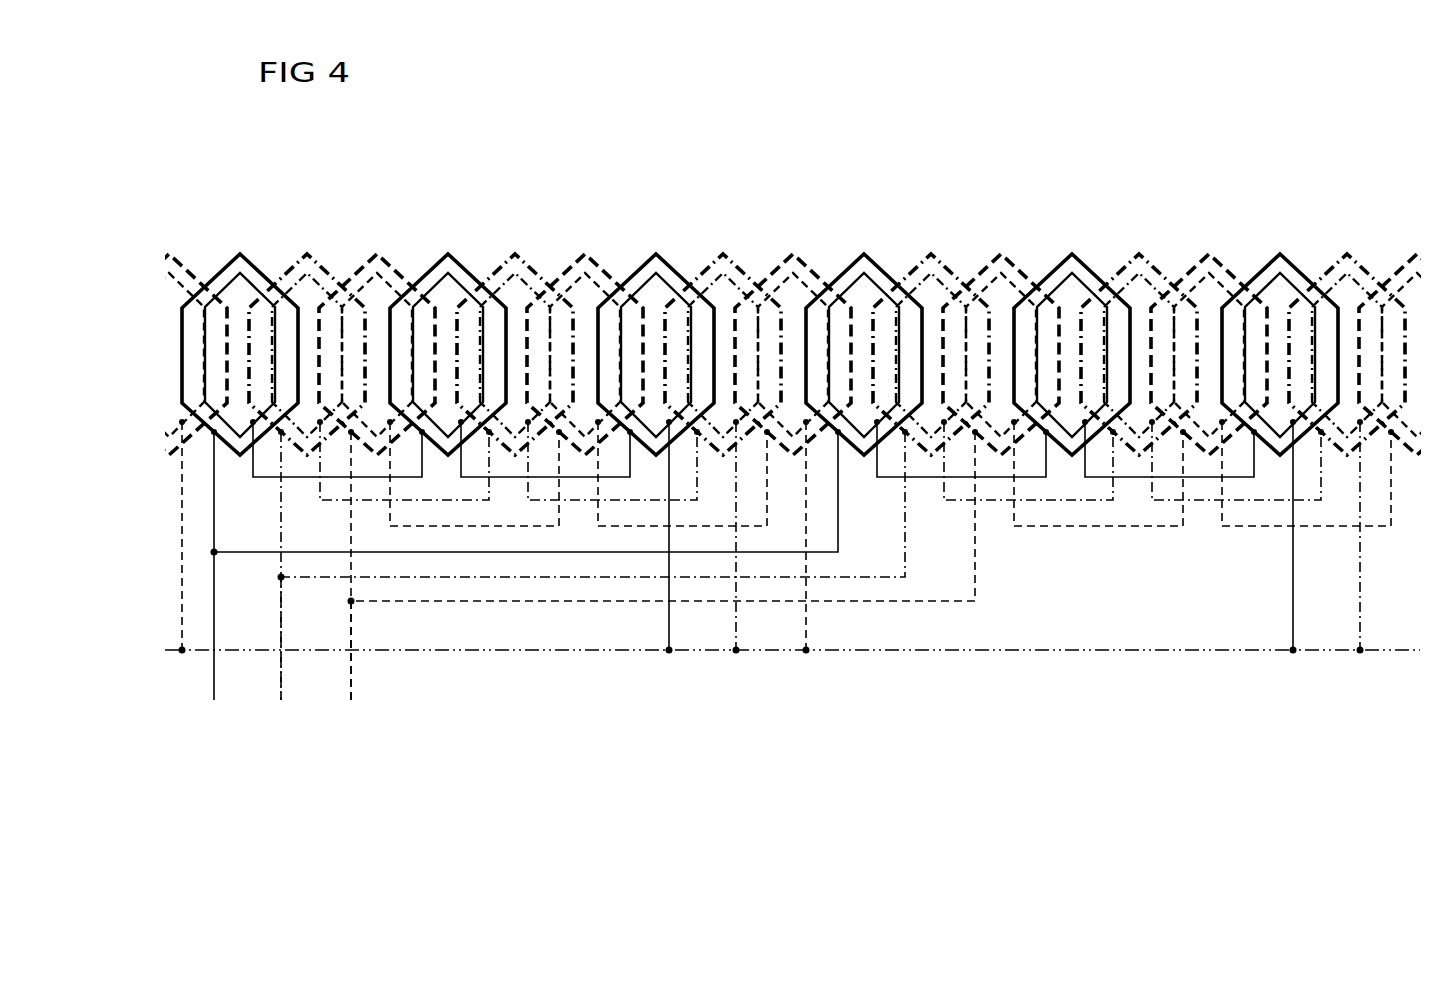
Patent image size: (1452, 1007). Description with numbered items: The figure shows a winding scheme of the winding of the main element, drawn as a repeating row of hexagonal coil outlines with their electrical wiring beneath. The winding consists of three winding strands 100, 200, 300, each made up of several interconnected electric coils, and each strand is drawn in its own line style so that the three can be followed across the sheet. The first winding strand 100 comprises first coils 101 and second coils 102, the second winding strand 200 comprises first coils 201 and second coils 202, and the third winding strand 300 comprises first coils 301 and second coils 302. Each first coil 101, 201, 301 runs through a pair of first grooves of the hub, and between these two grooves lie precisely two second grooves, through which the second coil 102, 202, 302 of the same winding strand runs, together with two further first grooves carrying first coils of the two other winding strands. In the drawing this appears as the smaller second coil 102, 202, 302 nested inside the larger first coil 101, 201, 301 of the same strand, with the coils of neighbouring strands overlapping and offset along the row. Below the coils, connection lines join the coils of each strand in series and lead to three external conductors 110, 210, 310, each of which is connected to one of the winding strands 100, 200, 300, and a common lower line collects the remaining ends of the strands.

The first winding strand 100 is at (268, 478).
The first coil of the first winding strand 101 is at (221, 268).
The second coil of the first winding strand 102 is at (211, 295).
The external conductor 110 is at (214, 677).
The second winding strand 200 is at (342, 502).
The first coil of the second winding strand 201 is at (291, 265).
The second coil of the second winding strand 202 is at (279, 295).
The external conductor 210 is at (281, 677).
The third winding strand 300 is at (453, 528).
The first coil of the third winding strand 301 is at (362, 265).
The second coil of the third winding strand 302 is at (350, 295).
The external conductor 310 is at (351, 677).